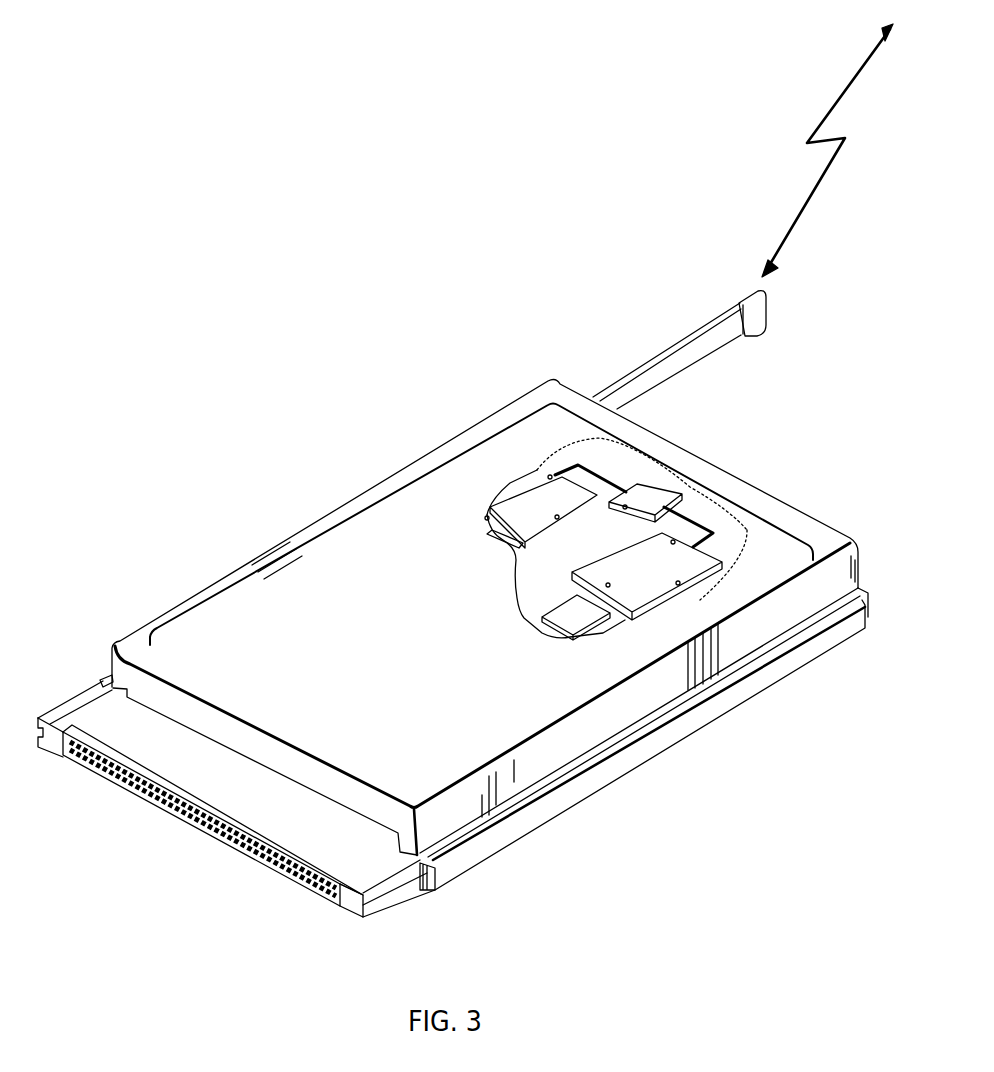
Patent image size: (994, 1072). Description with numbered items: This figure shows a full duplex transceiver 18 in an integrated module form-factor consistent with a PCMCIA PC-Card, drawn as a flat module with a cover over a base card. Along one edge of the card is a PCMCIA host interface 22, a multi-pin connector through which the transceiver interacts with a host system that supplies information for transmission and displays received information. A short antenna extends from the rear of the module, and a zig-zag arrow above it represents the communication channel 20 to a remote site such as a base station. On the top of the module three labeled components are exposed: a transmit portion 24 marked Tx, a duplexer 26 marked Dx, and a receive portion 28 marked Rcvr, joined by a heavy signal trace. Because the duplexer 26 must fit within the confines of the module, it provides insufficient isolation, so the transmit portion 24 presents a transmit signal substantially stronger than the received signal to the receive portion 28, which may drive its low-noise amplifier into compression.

The full duplex transceiver 18 is at (568, 755).
The communication channel 20 is at (823, 117).
The PCMCIA host interface 22 is at (215, 833).
The transmit portion 24 is at (533, 477).
The duplexer 26 is at (660, 490).
The receive portion 28 is at (677, 577).